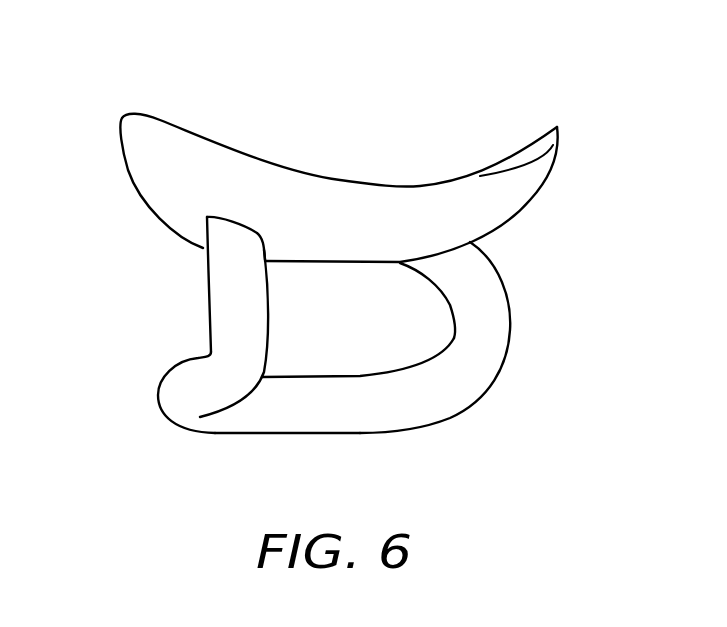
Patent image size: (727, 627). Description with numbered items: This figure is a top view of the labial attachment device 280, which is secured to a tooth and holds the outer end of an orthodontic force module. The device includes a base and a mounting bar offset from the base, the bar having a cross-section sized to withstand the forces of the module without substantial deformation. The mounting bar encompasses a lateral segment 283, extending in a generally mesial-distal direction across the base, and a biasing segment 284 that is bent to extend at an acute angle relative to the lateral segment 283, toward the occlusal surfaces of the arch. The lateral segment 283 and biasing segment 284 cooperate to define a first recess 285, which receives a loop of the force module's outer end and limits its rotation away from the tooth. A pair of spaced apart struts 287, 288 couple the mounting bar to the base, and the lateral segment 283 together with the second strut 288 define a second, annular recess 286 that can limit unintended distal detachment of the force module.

The attachment device 280 is at (353, 259).
The lateral segment 283 is at (358, 433).
The biasing segment 284 is at (172, 390).
The first recess 285 is at (300, 357).
The second annular recess 286 is at (453, 337).
The first strut 287 is at (222, 292).
The second strut 288 is at (480, 288).